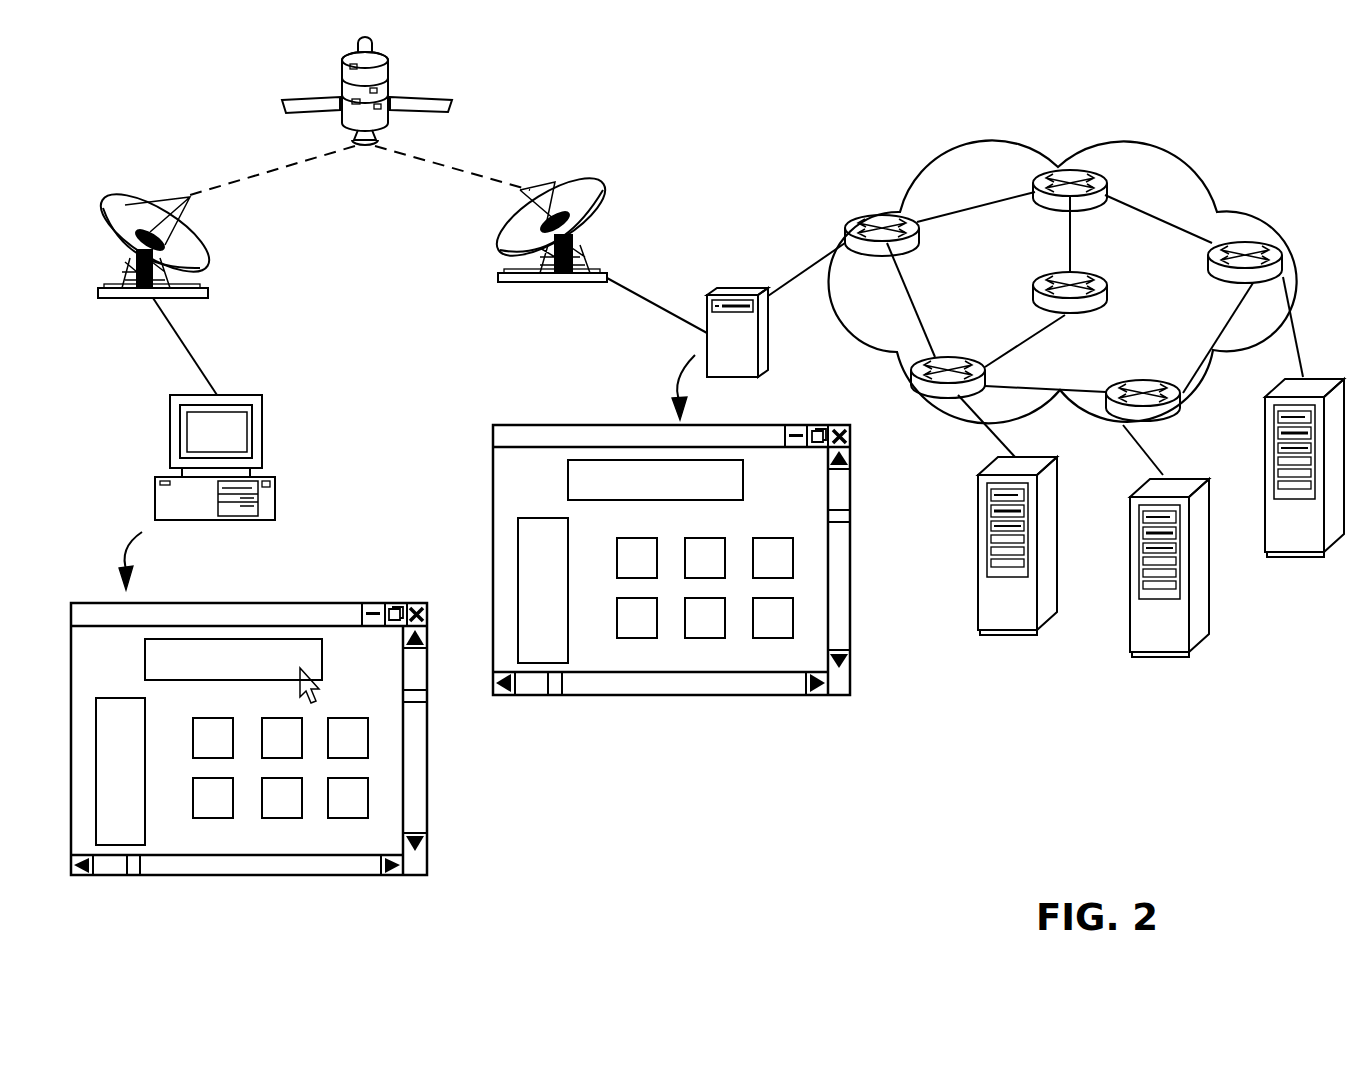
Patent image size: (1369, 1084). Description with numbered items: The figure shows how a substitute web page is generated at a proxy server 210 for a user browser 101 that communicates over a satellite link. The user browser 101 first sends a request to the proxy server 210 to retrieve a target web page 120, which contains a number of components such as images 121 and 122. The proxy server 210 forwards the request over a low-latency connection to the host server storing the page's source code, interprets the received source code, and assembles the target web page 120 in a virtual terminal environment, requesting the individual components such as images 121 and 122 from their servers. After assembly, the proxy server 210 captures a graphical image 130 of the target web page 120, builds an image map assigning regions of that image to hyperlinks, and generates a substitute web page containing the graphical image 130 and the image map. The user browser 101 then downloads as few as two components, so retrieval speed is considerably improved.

The user browser 101 is at (253, 431).
The proxy server 210 is at (738, 295).
The target web page 120 is at (708, 695).
The graphical image 130 is at (278, 877).
The image 121 is at (444, 570).
The image 122 is at (332, 681).